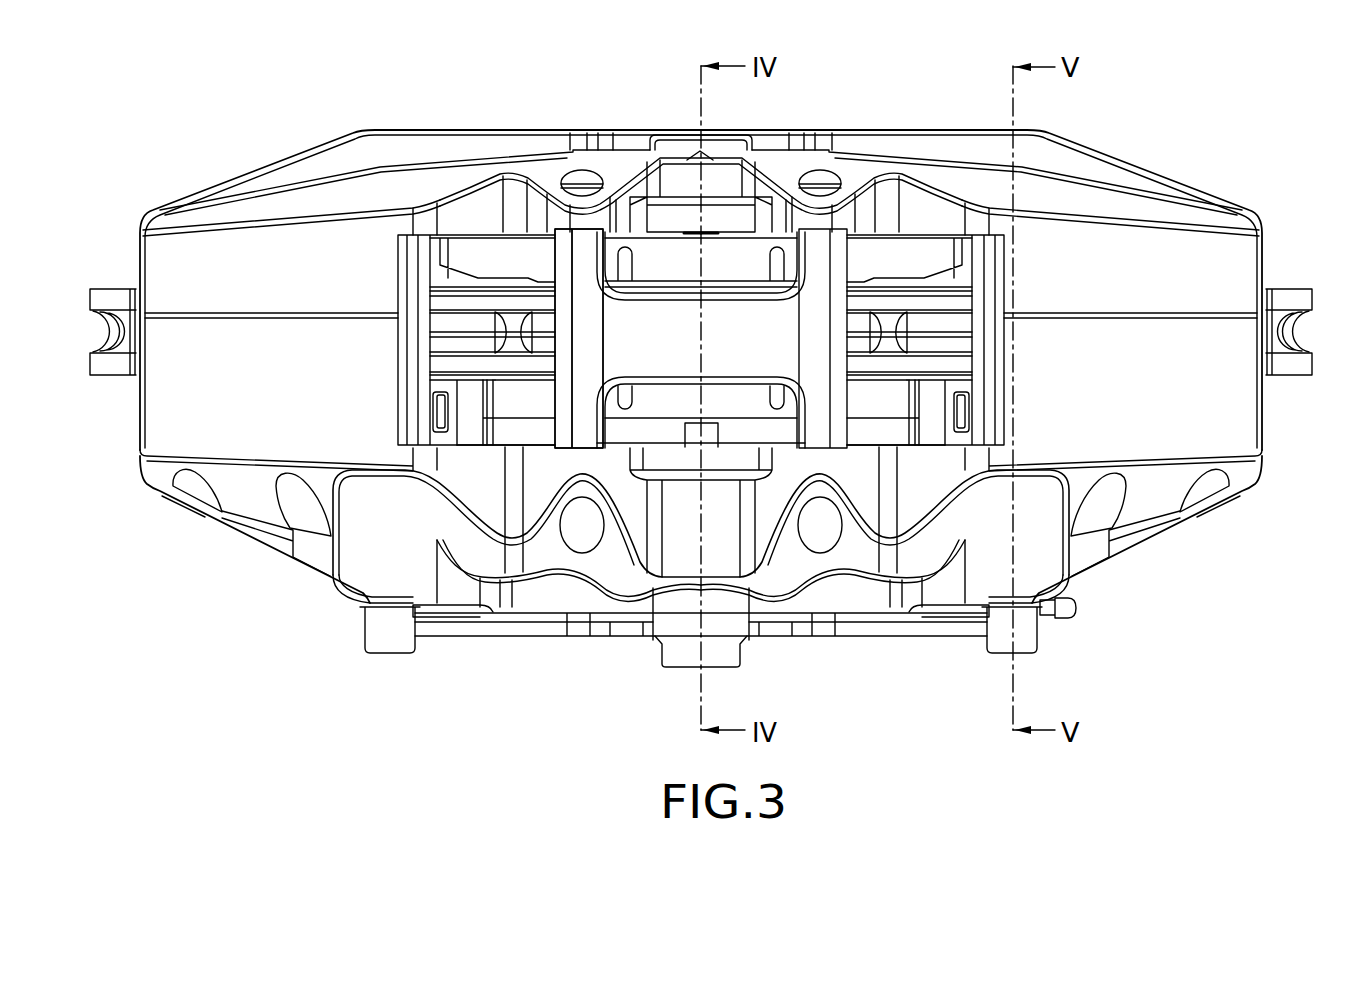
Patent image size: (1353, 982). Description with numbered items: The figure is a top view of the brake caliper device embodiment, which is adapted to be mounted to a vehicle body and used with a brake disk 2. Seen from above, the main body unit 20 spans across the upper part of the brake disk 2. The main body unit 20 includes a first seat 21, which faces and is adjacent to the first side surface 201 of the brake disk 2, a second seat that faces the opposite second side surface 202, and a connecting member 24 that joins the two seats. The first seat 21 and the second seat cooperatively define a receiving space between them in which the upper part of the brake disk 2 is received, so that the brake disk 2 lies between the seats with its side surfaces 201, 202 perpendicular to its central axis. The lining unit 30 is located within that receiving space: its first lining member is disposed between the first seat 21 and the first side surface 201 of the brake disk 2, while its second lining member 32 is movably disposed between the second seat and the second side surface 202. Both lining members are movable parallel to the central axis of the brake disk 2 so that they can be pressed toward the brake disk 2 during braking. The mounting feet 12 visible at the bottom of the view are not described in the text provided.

The main body unit 20 is at (145, 205).
The first seat 21 is at (147, 463).
The brake disk 2 is at (447, 297).
The second side surface 202 is at (497, 297).
The first side surface 201 is at (474, 362).
The lining unit 30 is at (520, 402).
The connecting member 24 is at (820, 258).
The second lining member 32 is at (921, 260).
The mounting foot 12 is at (392, 638).